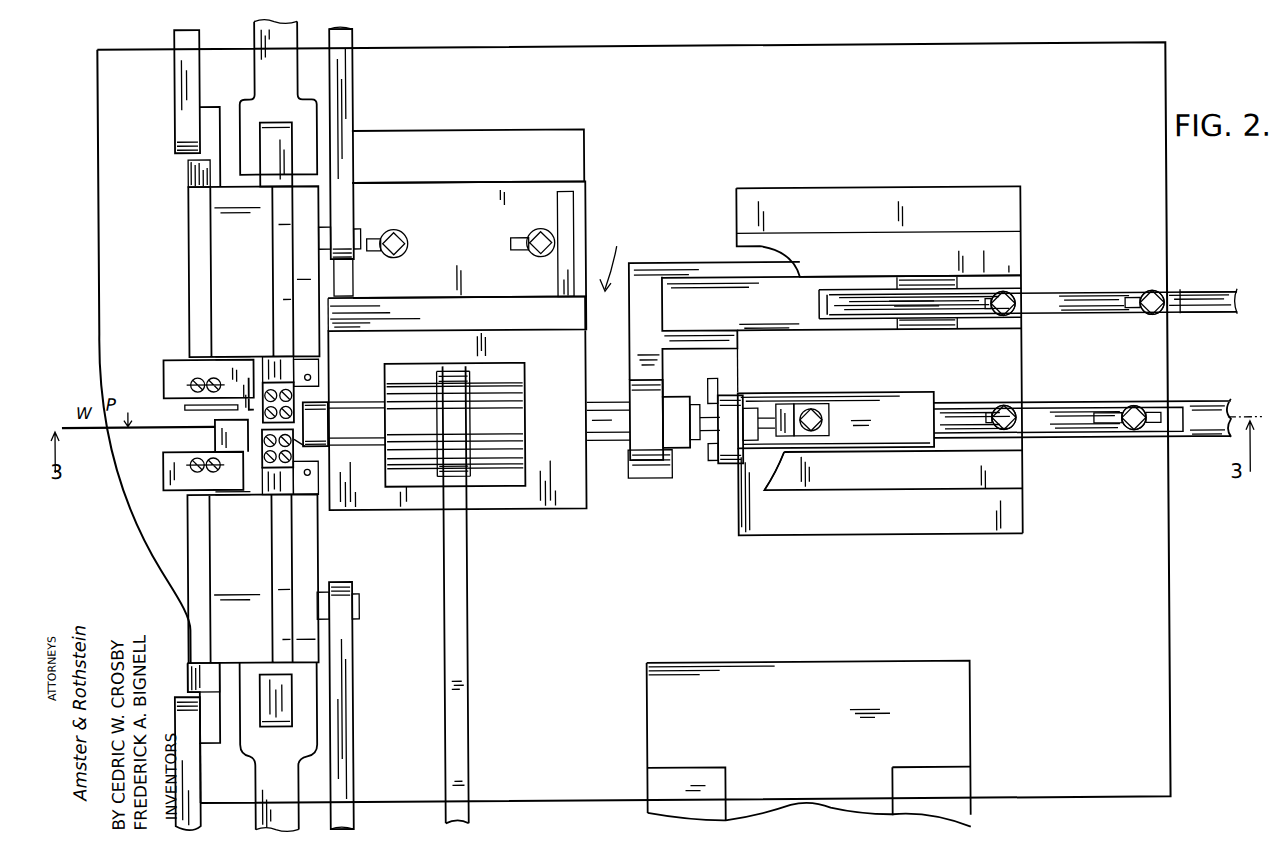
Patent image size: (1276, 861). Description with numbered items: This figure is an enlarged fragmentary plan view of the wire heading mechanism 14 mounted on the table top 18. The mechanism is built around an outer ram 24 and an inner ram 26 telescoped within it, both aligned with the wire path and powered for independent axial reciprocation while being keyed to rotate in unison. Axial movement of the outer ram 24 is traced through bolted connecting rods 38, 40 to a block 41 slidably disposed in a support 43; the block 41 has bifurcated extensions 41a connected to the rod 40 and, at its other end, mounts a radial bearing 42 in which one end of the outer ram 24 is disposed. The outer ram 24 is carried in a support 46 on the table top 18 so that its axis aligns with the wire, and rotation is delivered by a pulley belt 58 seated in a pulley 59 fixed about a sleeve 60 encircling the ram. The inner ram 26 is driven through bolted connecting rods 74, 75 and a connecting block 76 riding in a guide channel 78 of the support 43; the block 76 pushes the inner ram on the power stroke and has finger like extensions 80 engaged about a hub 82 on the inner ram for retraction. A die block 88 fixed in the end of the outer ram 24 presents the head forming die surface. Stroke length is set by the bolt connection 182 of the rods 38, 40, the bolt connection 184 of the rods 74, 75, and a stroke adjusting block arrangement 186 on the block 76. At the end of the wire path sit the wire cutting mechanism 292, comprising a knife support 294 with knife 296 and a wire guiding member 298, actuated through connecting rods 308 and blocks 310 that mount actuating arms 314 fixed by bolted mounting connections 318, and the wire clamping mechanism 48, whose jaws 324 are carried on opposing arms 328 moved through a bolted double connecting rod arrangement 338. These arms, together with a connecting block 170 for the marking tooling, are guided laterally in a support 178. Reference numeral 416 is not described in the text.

The wire heading mechanism 14 is at (623, 249).
The table top 18 is at (1171, 84).
The outer ram 24 is at (331, 436).
The inner ram 26 is at (706, 433).
The connecting rod 38 is at (1207, 297).
The connecting rod 40 is at (1078, 295).
The block 41 is at (782, 312).
The bifurcated extensions 41a is at (928, 283).
The radial bearing 42 is at (650, 448).
The support 43 is at (912, 483).
The support 46 is at (560, 434).
The wire clamping mechanism 48 is at (302, 447).
The pulley belt 58 is at (465, 608).
The pulley 59 is at (470, 432).
The sleeve 60 is at (518, 402).
The connecting rod 74 is at (1205, 442).
The connecting rod 75 is at (1073, 435).
The connecting block 76 is at (896, 438).
The guide channel 78 is at (948, 456).
The finger like extensions 80 is at (714, 381).
The hub 82 is at (735, 459).
The die block 88 is at (312, 417).
The connecting block 170 is at (357, 97).
The support 178 is at (250, 262).
The bolt connection 182 is at (1012, 302).
The bolt connection 184 is at (1013, 415).
The stroke adjusting block arrangement 186 is at (816, 408).
The wire cutting mechanism 292 is at (181, 406).
The knife support 294 is at (166, 357).
The knife 296 is at (251, 401).
The wire guiding member 298 is at (172, 487).
The connecting rod 308 is at (178, 89).
The block 310 is at (192, 167).
The actuating arms 314 is at (233, 355).
The bolted mounting connections 318 is at (212, 377).
The jaws 324 is at (297, 407).
The arms 328 is at (274, 132).
The bolted double connecting rod arrangement 338 is at (280, 87).
The bracket 416 is at (636, 356).